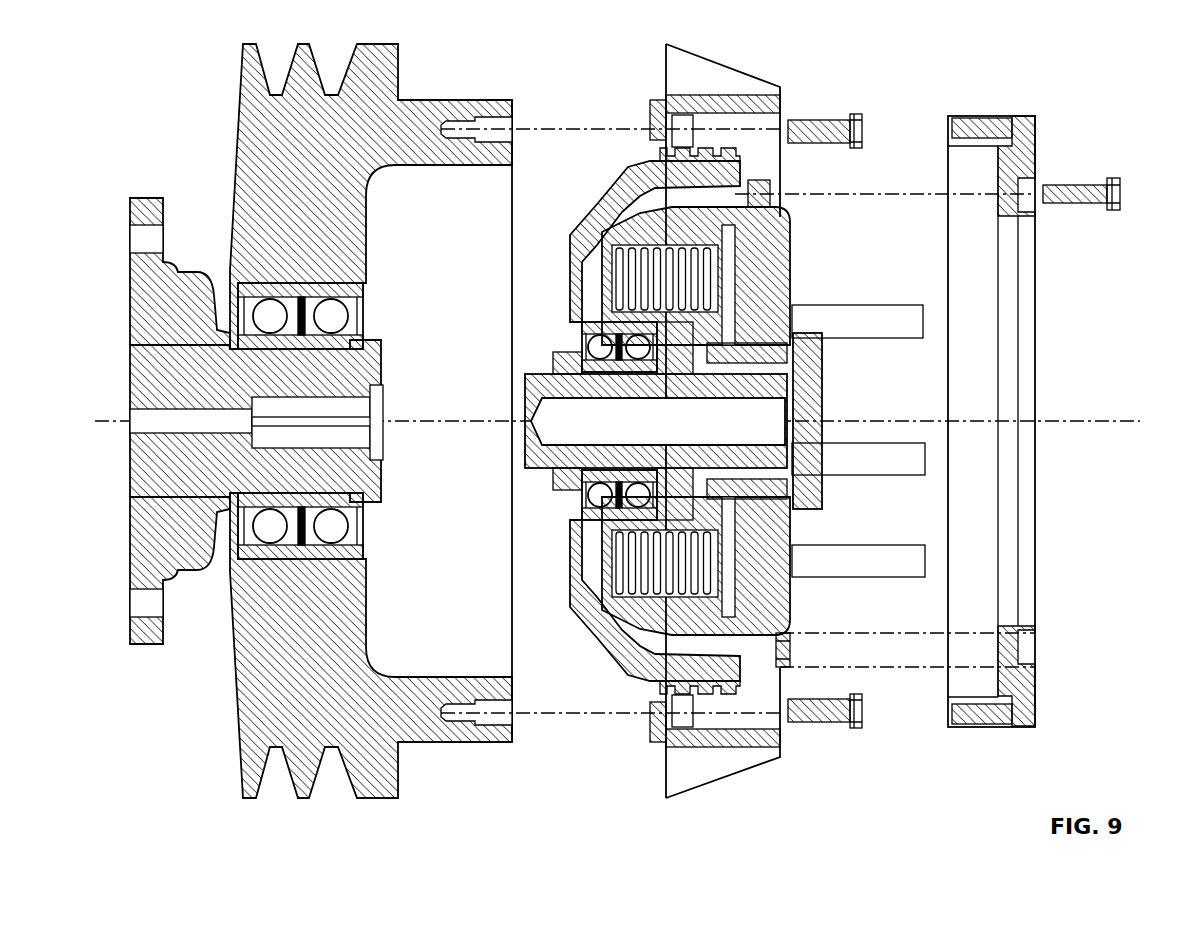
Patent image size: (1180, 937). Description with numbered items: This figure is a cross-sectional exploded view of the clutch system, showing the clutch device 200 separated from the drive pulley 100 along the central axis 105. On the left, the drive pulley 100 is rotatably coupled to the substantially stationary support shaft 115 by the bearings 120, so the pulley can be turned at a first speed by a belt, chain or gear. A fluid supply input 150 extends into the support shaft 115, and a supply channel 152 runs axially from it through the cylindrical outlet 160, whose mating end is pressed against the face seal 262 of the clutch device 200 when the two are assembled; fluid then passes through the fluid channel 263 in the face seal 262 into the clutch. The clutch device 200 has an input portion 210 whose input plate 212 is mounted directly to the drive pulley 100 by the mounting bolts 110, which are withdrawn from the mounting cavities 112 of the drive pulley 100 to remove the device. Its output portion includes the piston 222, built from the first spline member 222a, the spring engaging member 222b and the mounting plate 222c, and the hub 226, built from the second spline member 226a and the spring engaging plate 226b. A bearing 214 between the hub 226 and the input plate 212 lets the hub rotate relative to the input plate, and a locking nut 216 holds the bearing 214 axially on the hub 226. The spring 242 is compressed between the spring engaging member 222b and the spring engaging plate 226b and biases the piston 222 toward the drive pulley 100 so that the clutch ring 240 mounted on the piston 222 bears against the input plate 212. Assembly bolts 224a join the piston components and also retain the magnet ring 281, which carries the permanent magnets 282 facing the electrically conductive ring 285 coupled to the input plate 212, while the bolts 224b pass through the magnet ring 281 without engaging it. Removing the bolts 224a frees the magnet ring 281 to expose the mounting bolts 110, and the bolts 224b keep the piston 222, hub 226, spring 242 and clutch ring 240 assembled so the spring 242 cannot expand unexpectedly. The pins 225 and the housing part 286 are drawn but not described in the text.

The drive pulley 100 is at (452, 78).
The central axis 105 is at (128, 420).
The mounting bolts 110 is at (864, 131).
The mounting cavities 112 is at (514, 127).
The support shaft 115 is at (143, 291).
The bearings 120 is at (270, 533).
The fluid supply input 150 is at (141, 428).
The supply channel 152 is at (252, 423).
The cylindrical outlet 160 is at (272, 402).
The clutch device 200 is at (804, 78).
The input portion 210 is at (802, 421).
The input plate 212 is at (632, 178).
The bearing 214 is at (583, 329).
The locking nut 216 is at (567, 358).
The piston 222 is at (767, 421).
The first spline member 222a is at (782, 318).
The spring engaging member 222b is at (796, 236).
The mounting plate 222c is at (778, 288).
The assembly bolts 224a is at (1113, 212).
The assembly bolts 224b is at (792, 650).
The pin 225 is at (887, 340).
The hub 226 is at (862, 436).
The second spline member 226a is at (770, 468).
The spring engaging plate 226b is at (778, 513).
The clutch ring 240 is at (617, 657).
The spring 242 is at (618, 590).
The face seal 262 is at (619, 419).
The fluid channel 263 is at (580, 430).
The magnet ring 281 is at (1030, 697).
The permanent magnets 282 is at (985, 728).
The electrically conductive ring 285 is at (768, 738).
The housing 286 is at (728, 762).